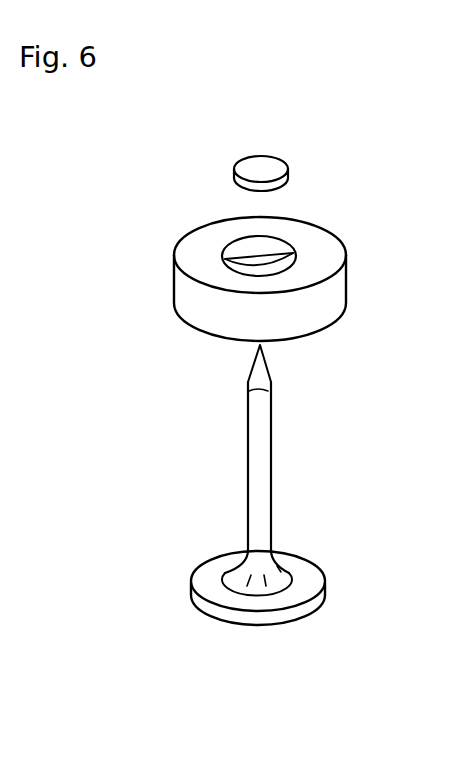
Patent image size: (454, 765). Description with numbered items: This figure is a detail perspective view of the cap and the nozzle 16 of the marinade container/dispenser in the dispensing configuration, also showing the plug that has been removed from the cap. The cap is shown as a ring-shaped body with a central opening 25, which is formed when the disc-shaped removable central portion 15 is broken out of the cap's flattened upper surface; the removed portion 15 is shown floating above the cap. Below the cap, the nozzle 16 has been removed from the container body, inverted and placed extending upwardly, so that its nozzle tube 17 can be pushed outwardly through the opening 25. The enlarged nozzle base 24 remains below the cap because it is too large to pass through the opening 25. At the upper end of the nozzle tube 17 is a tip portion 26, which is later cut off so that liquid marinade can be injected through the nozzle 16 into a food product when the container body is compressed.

The removable central portion 15 is at (263, 167).
The nozzle 16 is at (255, 477).
The nozzle tube 17 is at (273, 440).
The nozzle base 24 is at (308, 582).
The central opening 25 is at (246, 266).
The tip portion 26 is at (266, 365).